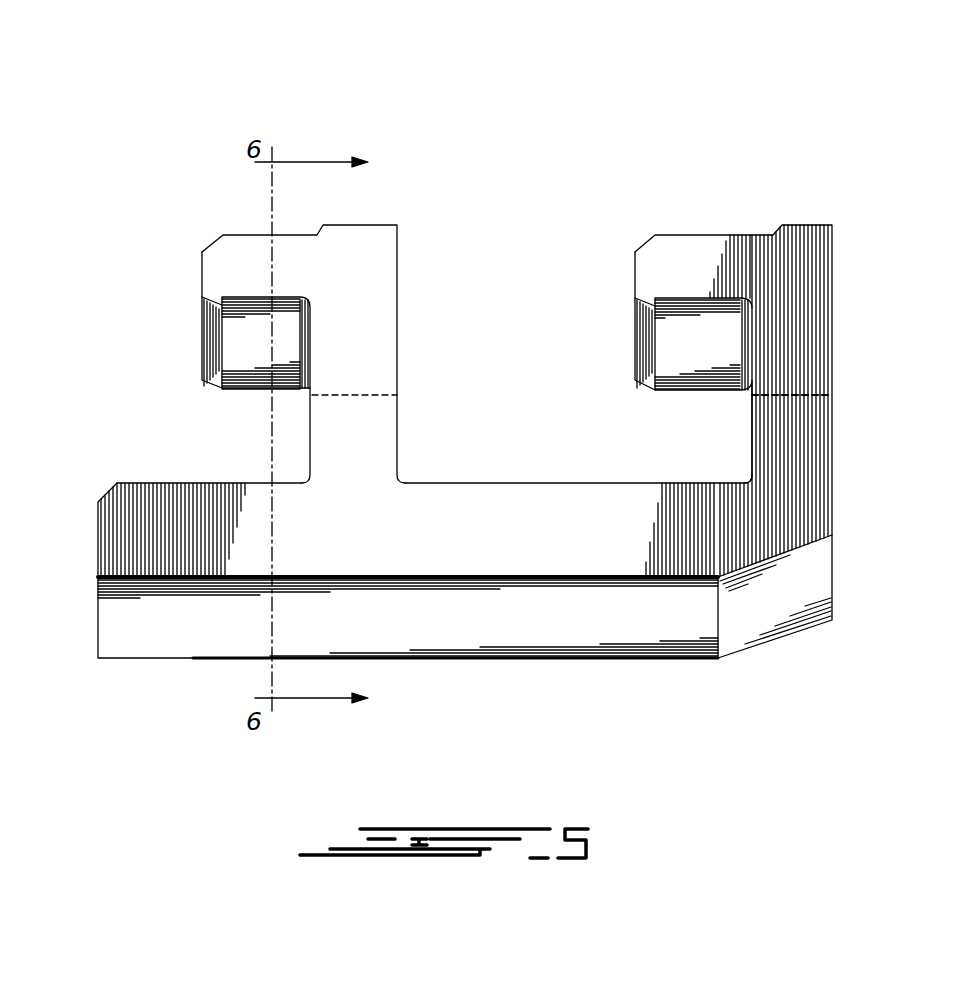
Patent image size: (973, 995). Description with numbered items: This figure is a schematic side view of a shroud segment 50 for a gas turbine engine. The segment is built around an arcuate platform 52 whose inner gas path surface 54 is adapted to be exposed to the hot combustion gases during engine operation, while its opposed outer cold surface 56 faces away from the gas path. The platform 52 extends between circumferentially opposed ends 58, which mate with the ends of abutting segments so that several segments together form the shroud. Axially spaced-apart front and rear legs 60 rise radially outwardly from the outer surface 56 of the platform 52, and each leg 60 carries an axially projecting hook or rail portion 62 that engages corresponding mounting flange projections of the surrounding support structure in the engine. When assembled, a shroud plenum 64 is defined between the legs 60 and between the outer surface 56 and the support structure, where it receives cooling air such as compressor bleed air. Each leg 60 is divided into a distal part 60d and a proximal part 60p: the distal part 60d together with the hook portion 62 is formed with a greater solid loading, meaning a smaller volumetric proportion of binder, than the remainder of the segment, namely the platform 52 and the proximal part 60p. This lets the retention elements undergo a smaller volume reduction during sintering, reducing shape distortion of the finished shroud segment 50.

The shroud segment 50 is at (535, 391).
The arcuate platform 52 is at (516, 573).
The inner gas path surface 54 is at (530, 615).
The outer cold surface 56 is at (483, 483).
The circumferentially opposed ends 58 is at (693, 530).
The front and rear legs 60 is at (804, 347).
The distal part of leg 60d is at (800, 358).
The proximal part of leg 60p is at (797, 437).
The hook portion 62 is at (680, 262).
The shroud plenum 64 is at (575, 353).